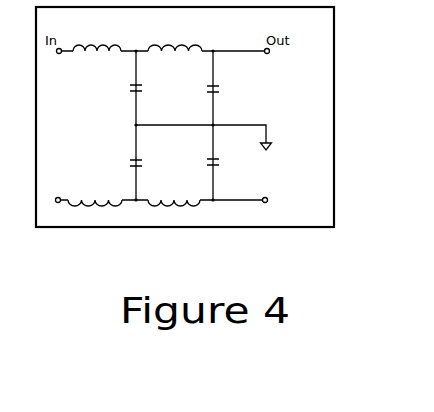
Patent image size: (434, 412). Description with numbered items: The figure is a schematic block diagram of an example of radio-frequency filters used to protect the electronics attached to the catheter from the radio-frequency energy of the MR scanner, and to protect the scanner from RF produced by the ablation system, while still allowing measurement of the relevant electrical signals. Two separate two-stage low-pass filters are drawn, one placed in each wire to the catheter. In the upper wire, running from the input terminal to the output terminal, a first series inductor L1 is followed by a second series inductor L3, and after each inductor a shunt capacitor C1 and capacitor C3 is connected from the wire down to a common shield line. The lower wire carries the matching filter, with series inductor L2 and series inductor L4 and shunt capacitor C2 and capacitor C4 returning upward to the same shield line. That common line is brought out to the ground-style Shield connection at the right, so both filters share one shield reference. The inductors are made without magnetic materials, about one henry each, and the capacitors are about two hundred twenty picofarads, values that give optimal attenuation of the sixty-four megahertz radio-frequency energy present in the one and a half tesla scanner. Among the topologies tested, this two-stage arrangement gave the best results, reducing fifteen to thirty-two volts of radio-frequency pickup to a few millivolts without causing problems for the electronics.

The inductor L1 is at (97, 36).
The inductor L2 is at (95, 194).
The inductor L3 is at (175, 36).
The inductor L4 is at (174, 194).
The capacitor C1 is at (149, 90).
The capacitor C2 is at (149, 164).
The capacitor C3 is at (226, 90).
The capacitor C4 is at (226, 164).
The shield Shield is at (227, 137).